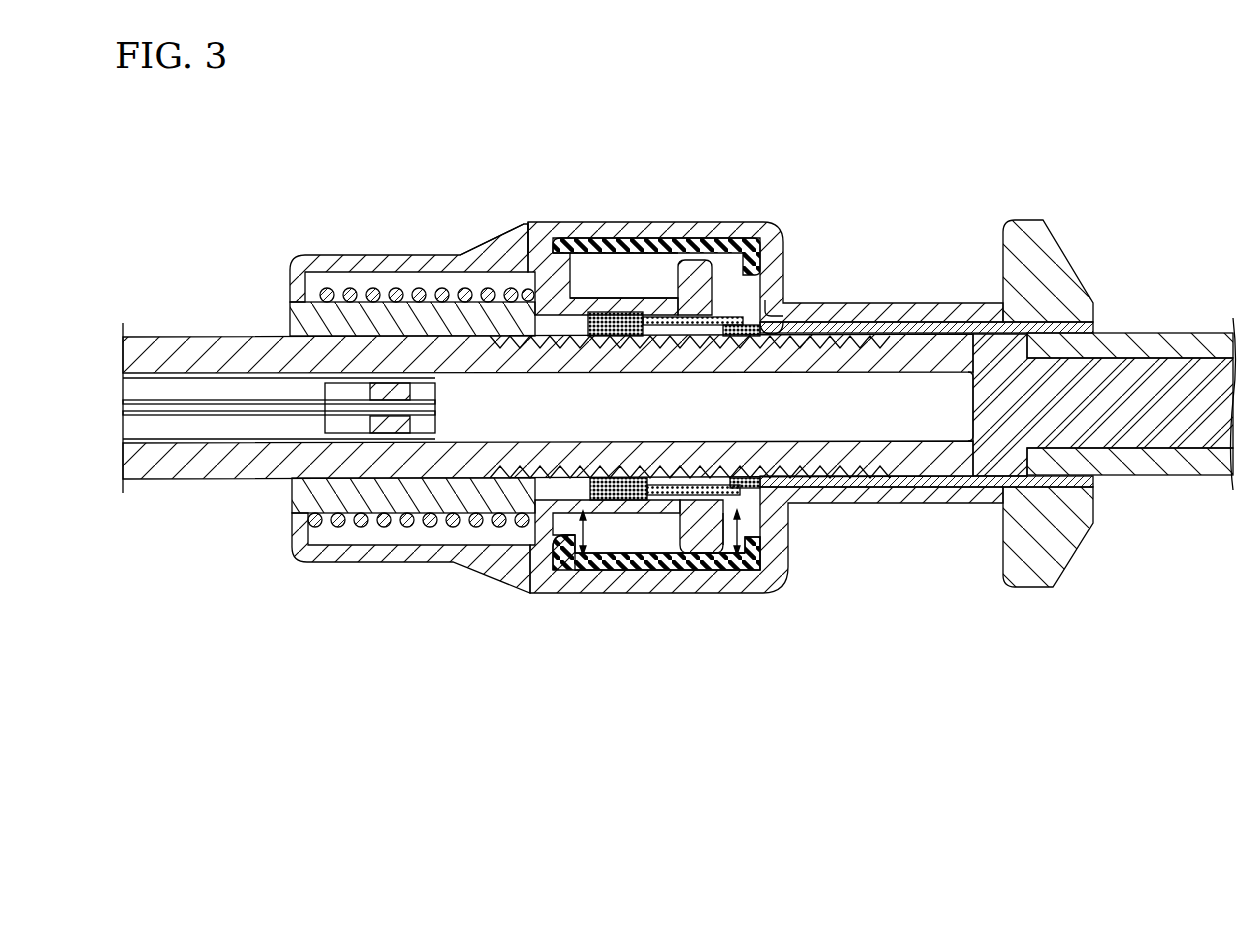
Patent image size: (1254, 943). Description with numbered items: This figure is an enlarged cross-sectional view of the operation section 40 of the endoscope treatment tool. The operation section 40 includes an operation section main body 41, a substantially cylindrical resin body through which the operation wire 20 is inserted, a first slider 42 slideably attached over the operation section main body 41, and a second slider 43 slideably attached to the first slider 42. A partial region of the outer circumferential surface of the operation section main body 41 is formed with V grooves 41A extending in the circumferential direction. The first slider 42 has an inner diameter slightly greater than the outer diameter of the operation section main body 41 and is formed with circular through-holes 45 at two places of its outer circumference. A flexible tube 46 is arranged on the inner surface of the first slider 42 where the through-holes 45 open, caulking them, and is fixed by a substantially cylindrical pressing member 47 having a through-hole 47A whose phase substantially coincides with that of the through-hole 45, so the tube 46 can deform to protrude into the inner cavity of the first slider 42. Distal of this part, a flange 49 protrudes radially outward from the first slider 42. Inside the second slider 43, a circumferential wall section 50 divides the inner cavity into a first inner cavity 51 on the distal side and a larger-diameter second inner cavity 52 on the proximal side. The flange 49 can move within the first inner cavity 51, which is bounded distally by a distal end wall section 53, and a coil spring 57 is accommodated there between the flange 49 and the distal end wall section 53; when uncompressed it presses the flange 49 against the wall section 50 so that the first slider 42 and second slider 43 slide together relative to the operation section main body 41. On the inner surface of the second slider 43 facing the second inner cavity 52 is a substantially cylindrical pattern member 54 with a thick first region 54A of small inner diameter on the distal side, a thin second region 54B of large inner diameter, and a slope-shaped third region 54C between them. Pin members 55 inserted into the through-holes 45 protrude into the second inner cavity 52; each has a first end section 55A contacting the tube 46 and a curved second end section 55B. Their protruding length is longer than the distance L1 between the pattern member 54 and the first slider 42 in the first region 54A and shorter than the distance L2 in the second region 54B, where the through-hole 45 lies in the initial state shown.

The operation section main body 41 is at (198, 343).
The operation wire 20 is at (178, 410).
The distal end wall section 53 is at (310, 276).
The coil spring 57 is at (423, 255).
The flange 49 is at (521, 262).
The pressing member 47 is at (583, 248).
The second inner cavity 52 is at (615, 280).
The tube 46 is at (658, 318).
The through-hole 45 is at (708, 290).
The operation section 40 is at (776, 196).
The through-hole of the pressing member 47A is at (772, 336).
The V grooves 41A is at (838, 330).
The first slider 42 is at (290, 505).
The first inner cavity 51 is at (393, 530).
The wall section 50 is at (540, 558).
The distance L1 is at (582, 556).
The first region 54A is at (607, 570).
The third region 54C is at (648, 566).
The pin member 55 is at (673, 543).
The second end section 55B is at (712, 566).
The second region 54B is at (750, 570).
The distance L2 is at (740, 556).
The pattern member 54 is at (760, 568).
The first end section 55A is at (757, 540).
The second slider 43 is at (1005, 518).